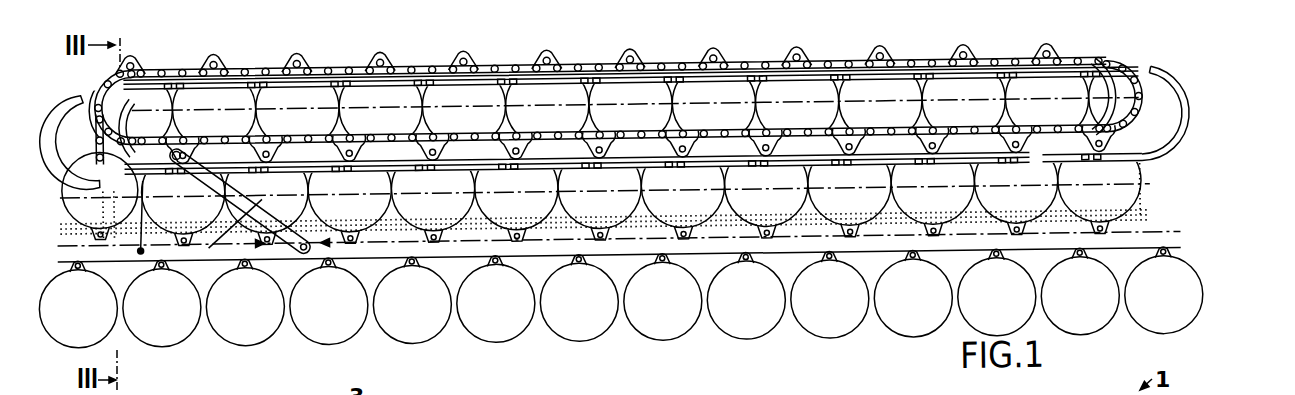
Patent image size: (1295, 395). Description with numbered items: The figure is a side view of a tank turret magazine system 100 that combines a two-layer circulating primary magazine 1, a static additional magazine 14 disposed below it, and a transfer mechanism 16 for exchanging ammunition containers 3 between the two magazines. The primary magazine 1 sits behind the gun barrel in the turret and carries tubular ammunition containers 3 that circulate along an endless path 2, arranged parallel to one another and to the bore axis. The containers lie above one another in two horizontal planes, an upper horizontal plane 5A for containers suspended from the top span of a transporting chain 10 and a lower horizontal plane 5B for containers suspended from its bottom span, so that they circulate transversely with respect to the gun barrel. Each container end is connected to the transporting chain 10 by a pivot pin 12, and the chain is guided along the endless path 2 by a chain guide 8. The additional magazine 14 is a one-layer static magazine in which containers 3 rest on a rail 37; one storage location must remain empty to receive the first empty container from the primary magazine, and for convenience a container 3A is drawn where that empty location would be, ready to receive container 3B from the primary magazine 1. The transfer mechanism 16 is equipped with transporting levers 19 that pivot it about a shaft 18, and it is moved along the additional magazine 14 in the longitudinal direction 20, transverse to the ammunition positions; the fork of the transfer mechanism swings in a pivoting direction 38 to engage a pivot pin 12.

The primary magazine 1 is at (436, 58).
The endless path 2 is at (258, 64).
The ammunition containers 3 is at (340, 78).
The container 3A is at (157, 343).
The container 3B is at (62, 181).
The horizontal plane 5A is at (608, 102).
The horizontal plane 5B is at (543, 192).
The chain guide 8 is at (233, 64).
The transporting chain 10 is at (193, 64).
The pivot pin 12 is at (183, 143).
The additional magazine 14 is at (1172, 250).
The transfer mechanism 16 is at (208, 243).
The shaft 18 is at (307, 254).
The transporting levers 19 is at (202, 176).
The longitudinal direction 20 is at (283, 243).
The rail 37 is at (1137, 250).
The pivoting direction 38 is at (83, 216).
The tank turret magazine system 100 is at (1232, 122).